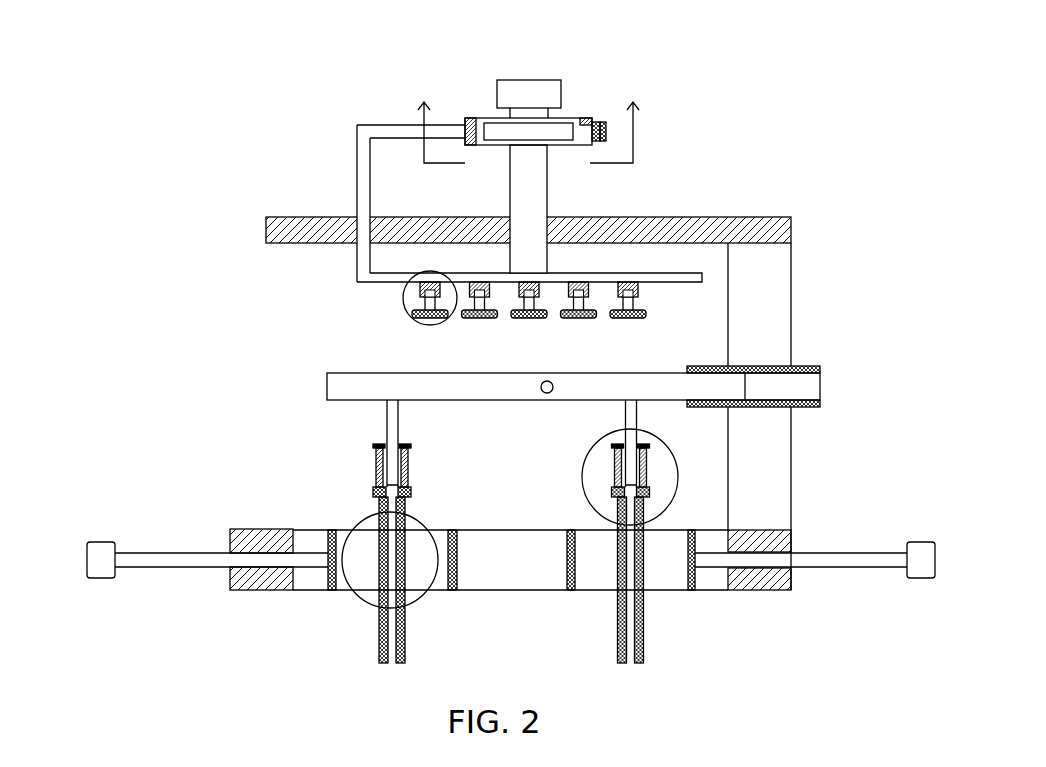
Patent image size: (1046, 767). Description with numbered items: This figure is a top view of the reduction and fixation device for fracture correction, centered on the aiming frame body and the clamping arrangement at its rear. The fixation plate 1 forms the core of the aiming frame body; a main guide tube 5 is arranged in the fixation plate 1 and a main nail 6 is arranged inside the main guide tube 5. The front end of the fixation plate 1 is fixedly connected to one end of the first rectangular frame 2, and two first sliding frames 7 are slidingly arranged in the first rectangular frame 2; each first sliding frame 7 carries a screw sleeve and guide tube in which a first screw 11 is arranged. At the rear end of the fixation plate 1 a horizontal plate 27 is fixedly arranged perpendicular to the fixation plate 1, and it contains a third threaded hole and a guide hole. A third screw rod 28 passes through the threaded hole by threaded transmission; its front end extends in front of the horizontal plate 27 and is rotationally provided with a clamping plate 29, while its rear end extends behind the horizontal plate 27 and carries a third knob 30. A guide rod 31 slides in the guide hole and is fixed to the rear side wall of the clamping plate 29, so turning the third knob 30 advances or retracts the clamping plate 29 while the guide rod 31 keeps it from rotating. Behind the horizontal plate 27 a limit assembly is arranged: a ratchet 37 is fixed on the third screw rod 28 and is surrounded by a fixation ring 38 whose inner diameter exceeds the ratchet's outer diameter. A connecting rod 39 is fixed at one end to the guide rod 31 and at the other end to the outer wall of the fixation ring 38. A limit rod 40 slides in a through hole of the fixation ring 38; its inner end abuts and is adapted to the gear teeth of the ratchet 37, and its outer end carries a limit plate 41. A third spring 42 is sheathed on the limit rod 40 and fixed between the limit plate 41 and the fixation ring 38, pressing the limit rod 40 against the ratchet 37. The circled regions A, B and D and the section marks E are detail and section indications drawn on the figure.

The fixation plate 1 is at (772, 503).
The first rectangular frame 2 is at (230, 529).
The main guide tube 5 is at (760, 367).
The main nail 6 is at (615, 383).
The first sliding frame 7 is at (695, 582).
The first screw 11 is at (390, 420).
The horizontal plate 27 is at (777, 217).
The third screw rod 28 is at (532, 245).
The clamping plate 29 is at (628, 273).
The third knob 30 is at (527, 92).
The guide rod 31 is at (360, 200).
The ratchet 37 is at (495, 130).
The fixation ring 38 is at (470, 120).
The connecting rod 39 is at (385, 125).
The limit rod 40 is at (583, 128).
The limit plate 41 is at (613, 123).
The third spring 42 is at (607, 127).
The detail A is at (350, 517).
The detail B is at (675, 463).
The detail D is at (403, 290).
The section E- E is at (528, 121).